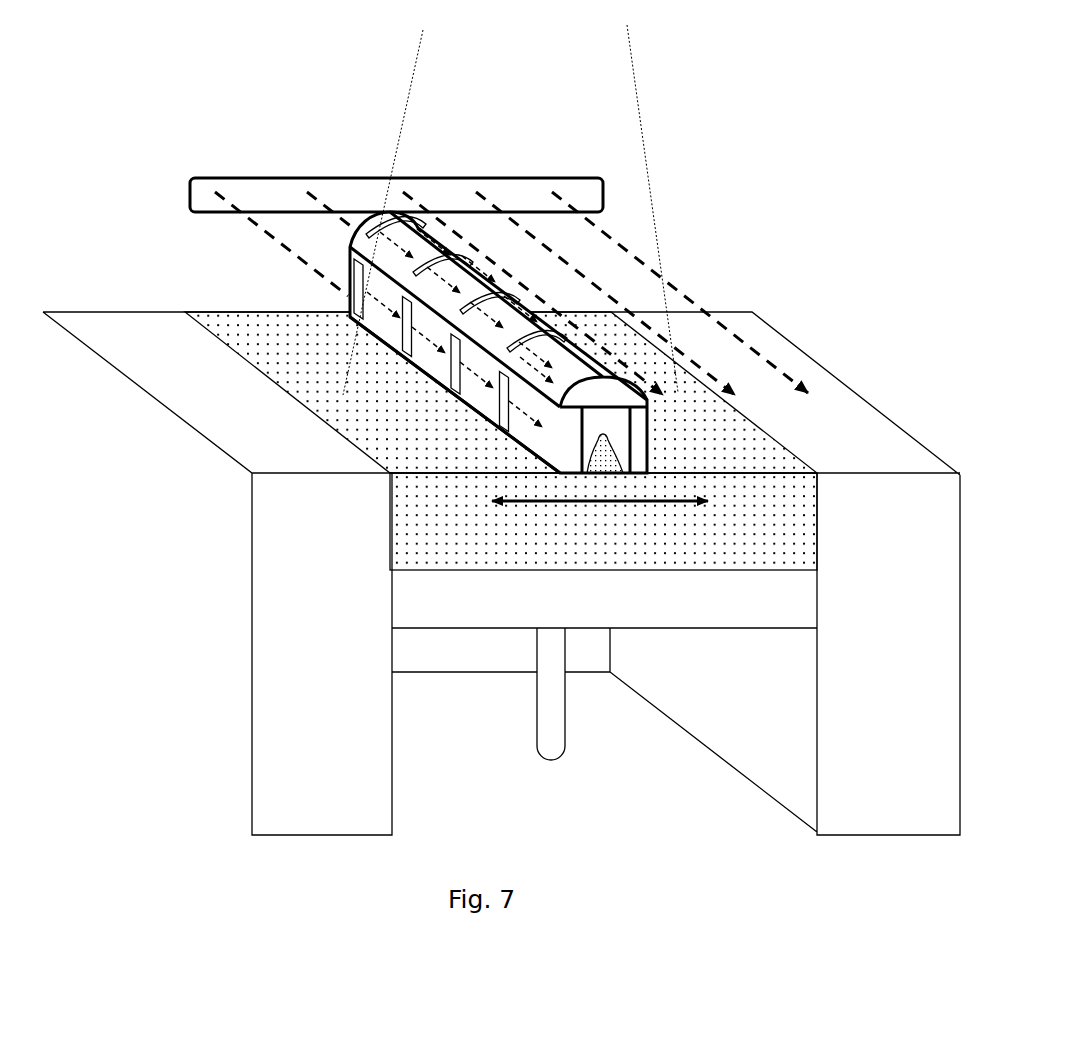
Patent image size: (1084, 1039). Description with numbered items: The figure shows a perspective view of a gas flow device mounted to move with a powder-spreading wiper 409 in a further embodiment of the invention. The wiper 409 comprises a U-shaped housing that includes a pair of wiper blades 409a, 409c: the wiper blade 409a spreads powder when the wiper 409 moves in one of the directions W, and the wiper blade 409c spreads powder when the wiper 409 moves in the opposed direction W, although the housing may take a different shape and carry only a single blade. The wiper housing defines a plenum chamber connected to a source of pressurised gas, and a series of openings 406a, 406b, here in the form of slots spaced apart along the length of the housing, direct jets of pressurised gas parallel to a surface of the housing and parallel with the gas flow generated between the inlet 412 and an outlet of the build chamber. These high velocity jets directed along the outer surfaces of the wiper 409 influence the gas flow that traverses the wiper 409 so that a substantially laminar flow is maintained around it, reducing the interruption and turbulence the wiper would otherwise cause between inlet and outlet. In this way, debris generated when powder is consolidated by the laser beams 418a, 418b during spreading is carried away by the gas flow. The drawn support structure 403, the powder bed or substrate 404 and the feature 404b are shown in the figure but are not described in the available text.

The table / support structure 403 is at (654, 606).
The substrate 404 is at (430, 526).
The weld bead 404b is at (613, 461).
The opening 406a is at (392, 219).
The opening 406b is at (357, 283).
The wiper 409 is at (489, 405).
The wiper blade 409a is at (570, 455).
The wiper blade 409c is at (643, 470).
The inlet 412 is at (249, 175).
The laser beam 418a is at (416, 68).
The laser beam 418b is at (638, 83).